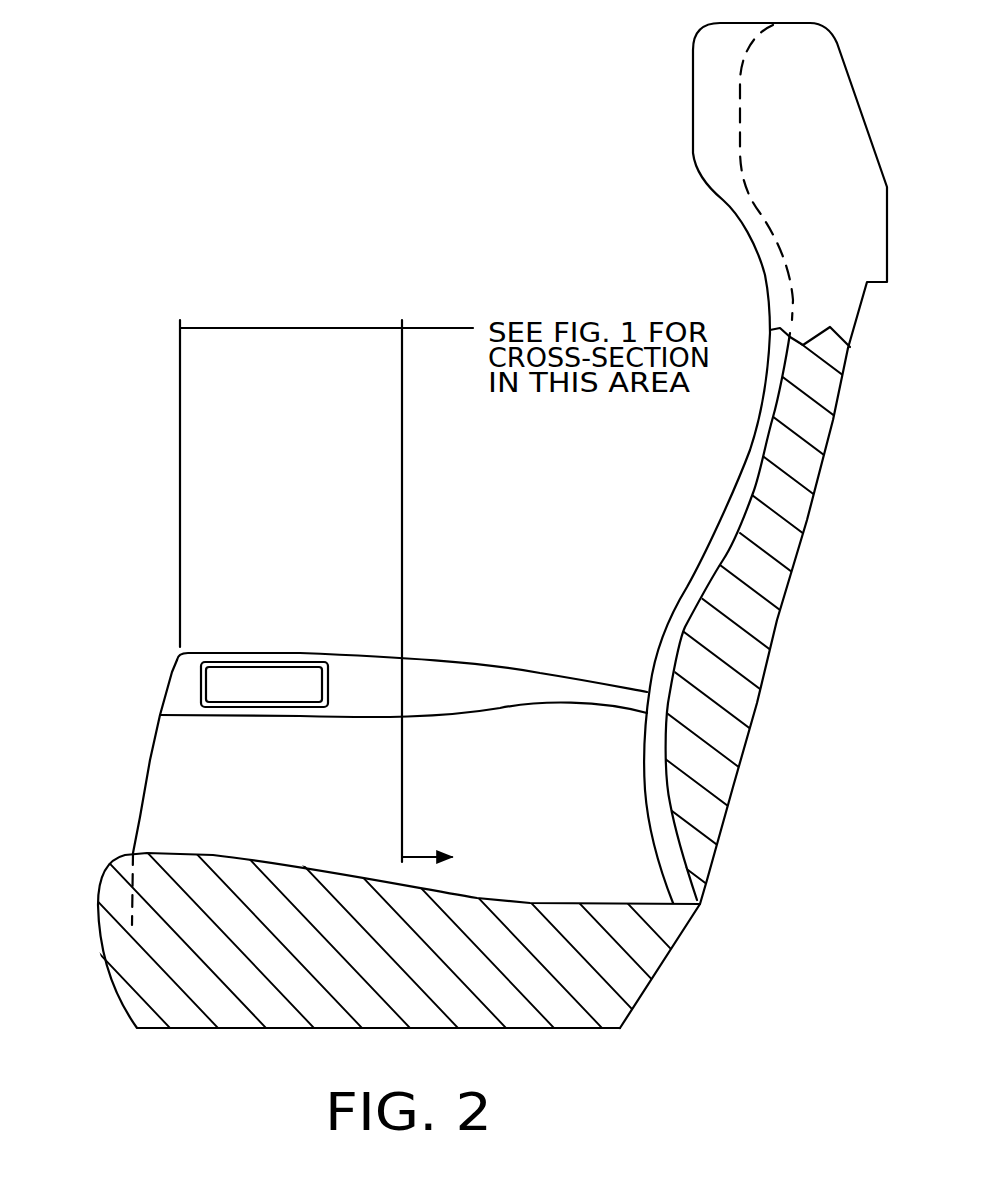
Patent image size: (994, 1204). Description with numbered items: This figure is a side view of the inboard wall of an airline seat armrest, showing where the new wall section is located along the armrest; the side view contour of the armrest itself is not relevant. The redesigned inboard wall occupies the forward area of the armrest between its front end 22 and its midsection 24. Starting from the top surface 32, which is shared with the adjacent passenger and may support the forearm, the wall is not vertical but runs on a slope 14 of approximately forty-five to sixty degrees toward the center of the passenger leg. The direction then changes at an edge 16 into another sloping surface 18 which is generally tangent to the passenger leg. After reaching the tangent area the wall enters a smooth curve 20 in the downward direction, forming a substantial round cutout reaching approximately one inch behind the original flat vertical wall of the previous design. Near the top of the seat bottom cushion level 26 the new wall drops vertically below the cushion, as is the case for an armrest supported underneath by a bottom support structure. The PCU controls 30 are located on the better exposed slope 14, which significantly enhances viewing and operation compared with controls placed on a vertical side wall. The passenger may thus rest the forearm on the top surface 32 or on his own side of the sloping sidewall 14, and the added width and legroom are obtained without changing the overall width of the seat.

The slope 14 is at (347, 685).
The edge 16 is at (285, 717).
The sloping surface 18 is at (197, 755).
The smooth curve 20 is at (207, 825).
The front end 22 is at (167, 673).
The midsection 24 is at (453, 528).
The seat bottom cushion level 26 is at (297, 870).
The PCU controls 30 is at (258, 682).
The top surface 32 is at (493, 665).